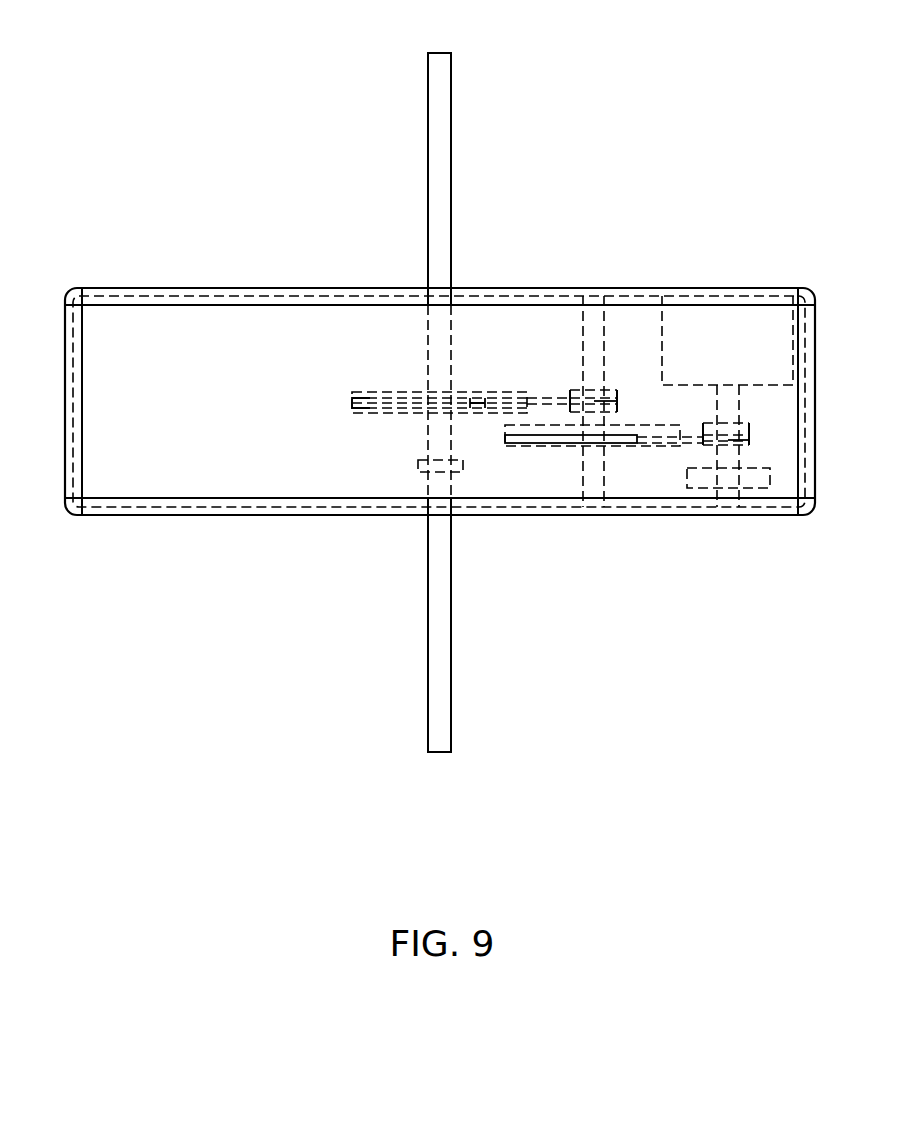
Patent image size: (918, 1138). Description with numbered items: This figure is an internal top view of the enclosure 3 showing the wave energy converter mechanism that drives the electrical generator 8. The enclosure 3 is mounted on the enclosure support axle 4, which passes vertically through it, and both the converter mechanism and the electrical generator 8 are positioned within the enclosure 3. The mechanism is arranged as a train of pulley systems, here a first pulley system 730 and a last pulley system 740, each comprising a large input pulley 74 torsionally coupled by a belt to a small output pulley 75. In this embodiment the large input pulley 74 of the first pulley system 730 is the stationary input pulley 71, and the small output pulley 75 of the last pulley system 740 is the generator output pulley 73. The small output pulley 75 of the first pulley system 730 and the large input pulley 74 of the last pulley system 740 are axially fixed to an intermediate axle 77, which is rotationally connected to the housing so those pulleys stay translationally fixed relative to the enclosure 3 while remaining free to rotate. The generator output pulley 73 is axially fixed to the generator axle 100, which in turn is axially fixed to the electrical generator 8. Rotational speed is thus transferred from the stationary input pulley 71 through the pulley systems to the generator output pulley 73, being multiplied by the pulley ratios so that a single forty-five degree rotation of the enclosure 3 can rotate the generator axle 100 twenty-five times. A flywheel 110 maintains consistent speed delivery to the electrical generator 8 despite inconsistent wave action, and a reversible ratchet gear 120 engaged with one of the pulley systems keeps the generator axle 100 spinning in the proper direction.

The enclosure 3 is at (288, 288).
The enclosure support axle 4 is at (443, 149).
The electrical generator 8 is at (730, 320).
The stationary input pulley 71 is at (362, 415).
The generator output pulley 73 is at (745, 428).
The large input pulley 74 is at (535, 447).
The small output pulley 75 is at (612, 390).
The intermediate axle 77 is at (586, 327).
The generator axle 100 is at (735, 452).
The flywheel 110 is at (699, 480).
The reversible ratchet gear 120 is at (418, 463).
The first pulley system 730 is at (534, 366).
The last pulley system 740 is at (681, 456).